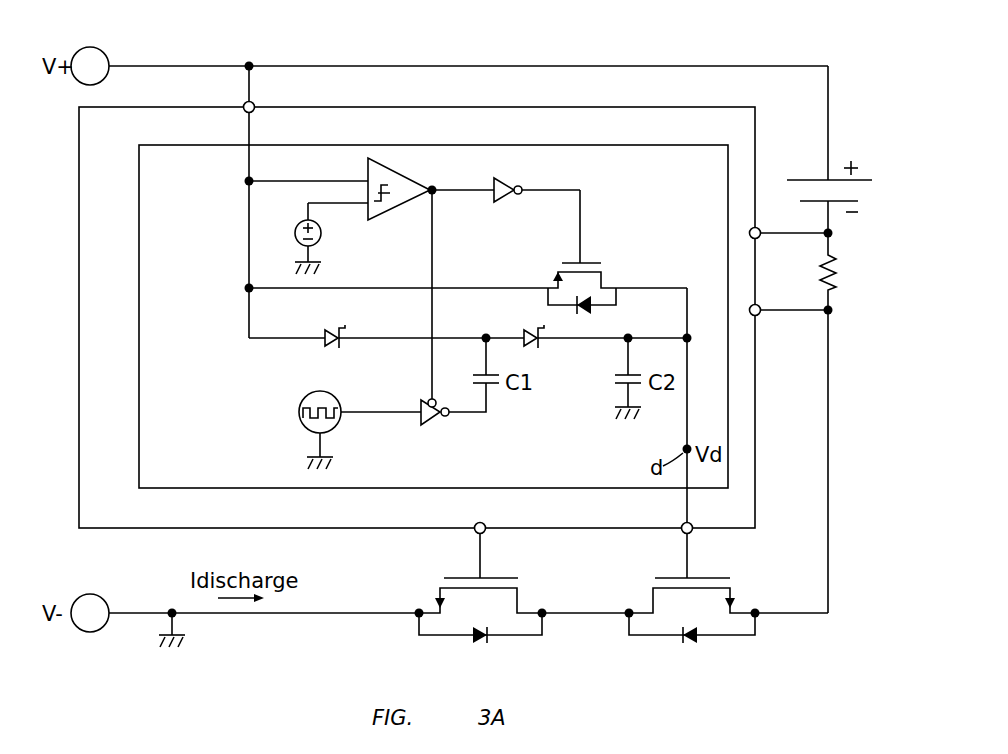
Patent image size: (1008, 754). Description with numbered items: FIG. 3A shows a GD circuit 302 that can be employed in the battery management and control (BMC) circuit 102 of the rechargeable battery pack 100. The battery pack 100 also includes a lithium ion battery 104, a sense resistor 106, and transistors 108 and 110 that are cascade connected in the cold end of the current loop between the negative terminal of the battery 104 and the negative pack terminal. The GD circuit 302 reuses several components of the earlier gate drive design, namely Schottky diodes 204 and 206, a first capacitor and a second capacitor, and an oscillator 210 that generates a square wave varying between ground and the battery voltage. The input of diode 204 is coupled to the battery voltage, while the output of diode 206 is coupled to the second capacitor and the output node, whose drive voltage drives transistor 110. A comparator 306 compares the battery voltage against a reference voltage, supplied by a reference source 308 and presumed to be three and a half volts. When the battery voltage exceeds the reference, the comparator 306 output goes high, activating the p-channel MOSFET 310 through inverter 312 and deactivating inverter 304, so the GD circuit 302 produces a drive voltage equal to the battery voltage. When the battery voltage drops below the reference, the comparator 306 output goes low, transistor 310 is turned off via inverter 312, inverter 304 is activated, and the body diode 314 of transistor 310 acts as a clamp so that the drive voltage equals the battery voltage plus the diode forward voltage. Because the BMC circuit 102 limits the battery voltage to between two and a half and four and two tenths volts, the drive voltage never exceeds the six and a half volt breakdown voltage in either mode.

The rechargeable battery pack 100 is at (842, 31).
The battery management and control (BMC) circuit 102 is at (744, 138).
The lithium ion battery cell 104 is at (808, 180).
The sense resistor 106 is at (816, 272).
The transistor 108 is at (520, 562).
The transistor 110 is at (700, 577).
The Schottky diode 204 is at (324, 346).
The Schottky diode 206 is at (522, 336).
The oscillator 210 is at (300, 420).
The GD circuit 302 is at (708, 182).
The inverter 304 is at (438, 430).
The comparator 306 is at (398, 177).
The reference voltage source VR1 308 is at (322, 238).
The p-channel metal oxide field effect transistor 310 is at (596, 268).
The inverter 312 is at (513, 186).
The body diode 314 is at (592, 308).